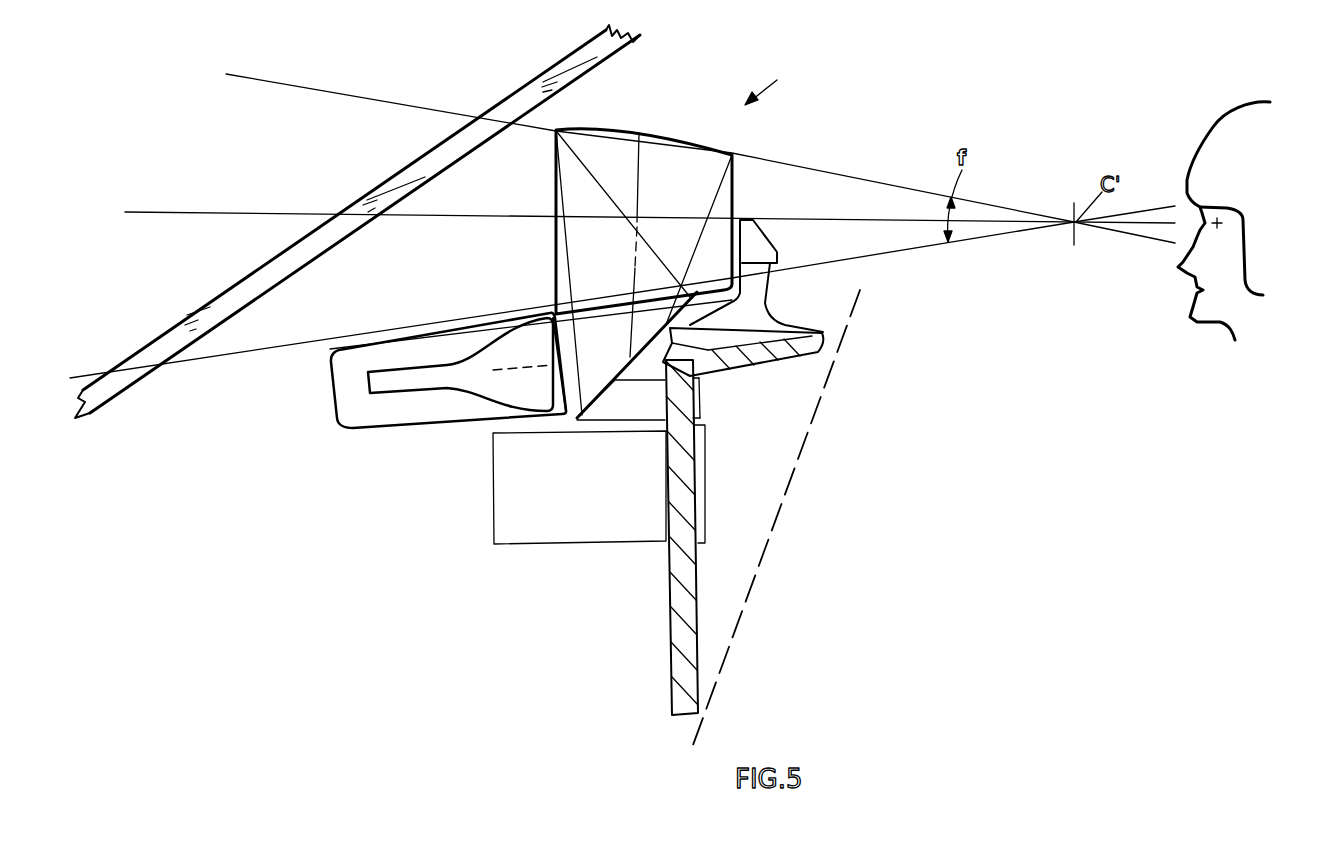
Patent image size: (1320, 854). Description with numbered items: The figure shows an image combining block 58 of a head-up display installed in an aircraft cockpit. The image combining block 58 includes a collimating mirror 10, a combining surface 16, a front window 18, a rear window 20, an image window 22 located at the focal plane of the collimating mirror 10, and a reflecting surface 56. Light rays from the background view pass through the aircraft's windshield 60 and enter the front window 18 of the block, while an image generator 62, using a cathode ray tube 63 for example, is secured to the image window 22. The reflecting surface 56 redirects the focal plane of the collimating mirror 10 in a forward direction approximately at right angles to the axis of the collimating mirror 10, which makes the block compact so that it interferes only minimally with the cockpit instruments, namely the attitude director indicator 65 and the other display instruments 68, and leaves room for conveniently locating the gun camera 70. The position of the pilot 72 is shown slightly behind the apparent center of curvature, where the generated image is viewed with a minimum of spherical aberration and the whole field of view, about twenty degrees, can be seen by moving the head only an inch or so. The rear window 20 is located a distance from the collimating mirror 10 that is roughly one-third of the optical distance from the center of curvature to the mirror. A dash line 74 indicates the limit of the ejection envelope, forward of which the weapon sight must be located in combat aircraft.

The collimating mirror 10 is at (663, 137).
The combining surface 16 is at (597, 187).
The front window 18 is at (555, 147).
The rear window 20 is at (733, 187).
The image window 22 is at (553, 383).
The reflecting surface 56 is at (603, 392).
The image combining block 58 is at (779, 85).
The aircraft windshield 60 is at (533, 88).
The image generator 62 is at (333, 402).
The cathode ray tube 63 is at (422, 388).
The attitude director indicator 65 is at (535, 528).
The display instruments 68 is at (657, 397).
The gun camera 70 is at (757, 303).
The pilot 72 is at (1217, 127).
The dash line indicating ejection envelope 74 is at (776, 530).